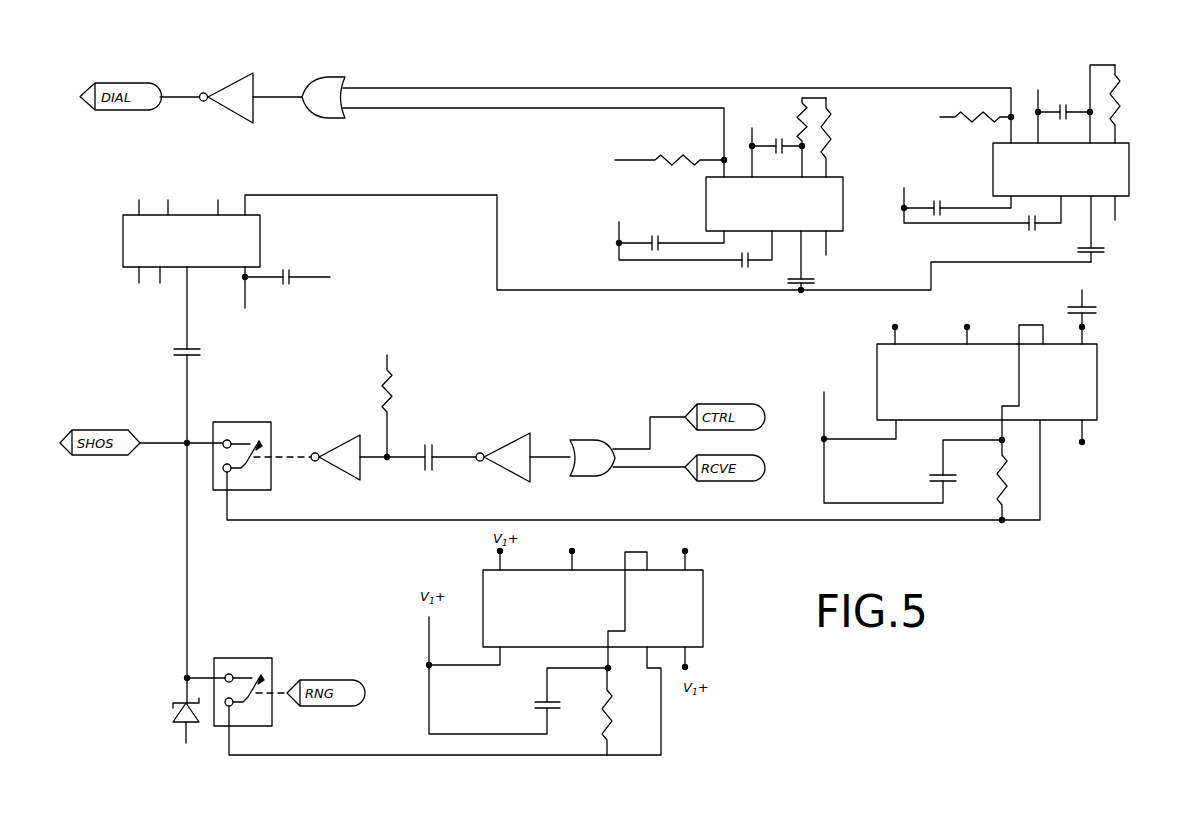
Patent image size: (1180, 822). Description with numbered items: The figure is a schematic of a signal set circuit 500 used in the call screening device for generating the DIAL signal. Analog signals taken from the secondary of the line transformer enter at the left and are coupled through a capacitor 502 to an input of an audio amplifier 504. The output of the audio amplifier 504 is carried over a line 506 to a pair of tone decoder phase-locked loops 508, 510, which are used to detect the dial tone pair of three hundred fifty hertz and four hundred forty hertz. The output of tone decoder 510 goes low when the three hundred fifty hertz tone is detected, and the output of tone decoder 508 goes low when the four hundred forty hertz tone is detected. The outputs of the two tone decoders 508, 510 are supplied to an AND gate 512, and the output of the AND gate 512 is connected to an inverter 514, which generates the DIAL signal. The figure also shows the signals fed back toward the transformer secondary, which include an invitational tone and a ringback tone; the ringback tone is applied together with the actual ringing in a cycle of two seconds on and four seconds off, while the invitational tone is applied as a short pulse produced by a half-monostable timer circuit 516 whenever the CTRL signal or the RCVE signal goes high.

The circuit 500 is at (1118, 300).
The capacitor 502 is at (177, 356).
The audio amplifier 504 is at (122, 250).
The line 506 is at (517, 298).
The tone decoder phase-locked loop 508 is at (848, 178).
The tone decoder phase-locked loop 510 is at (1130, 163).
The AND gate 512 is at (345, 80).
The inverter 514 is at (238, 75).
The half-monostable timer circuit 516 is at (436, 440).